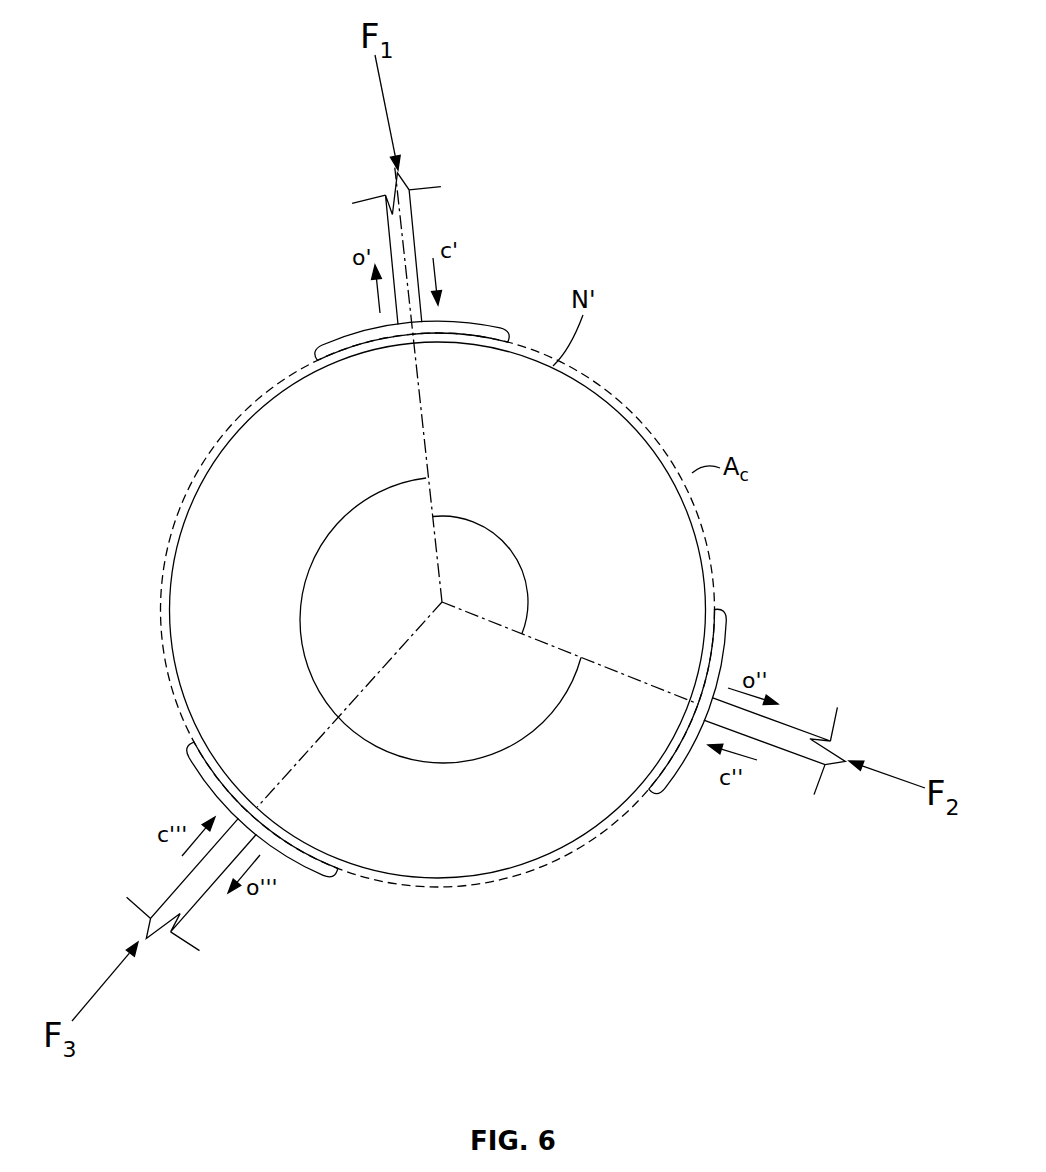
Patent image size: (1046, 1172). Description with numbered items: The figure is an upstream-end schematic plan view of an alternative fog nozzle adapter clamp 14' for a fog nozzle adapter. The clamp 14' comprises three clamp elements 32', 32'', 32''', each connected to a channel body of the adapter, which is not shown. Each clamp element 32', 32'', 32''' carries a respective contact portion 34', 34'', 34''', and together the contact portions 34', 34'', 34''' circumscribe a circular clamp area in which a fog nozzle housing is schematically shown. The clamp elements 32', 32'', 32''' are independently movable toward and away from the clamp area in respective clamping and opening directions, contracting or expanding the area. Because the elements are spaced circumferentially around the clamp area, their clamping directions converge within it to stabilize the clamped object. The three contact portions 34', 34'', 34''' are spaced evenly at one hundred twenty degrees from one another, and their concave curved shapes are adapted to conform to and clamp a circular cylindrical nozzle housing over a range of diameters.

The fog nozzle adapter clamp 14' is at (386, 476).
The clamp element 32' is at (417, 249).
The contact portion 34' is at (410, 317).
The clamp element 32'' is at (775, 724).
The contact portion 34'' is at (719, 688).
The clamp element 32''' is at (186, 884).
The contact portion 34''' is at (224, 809).